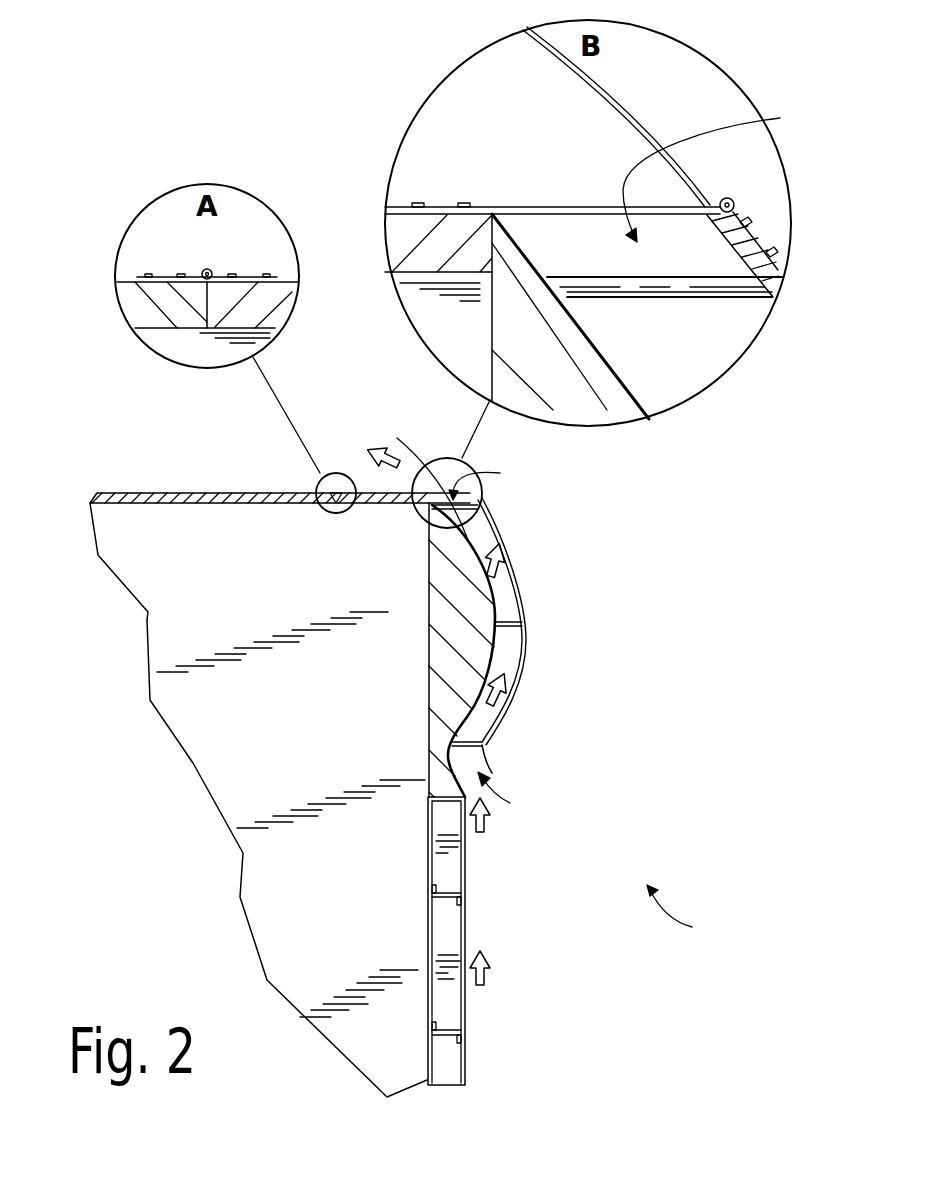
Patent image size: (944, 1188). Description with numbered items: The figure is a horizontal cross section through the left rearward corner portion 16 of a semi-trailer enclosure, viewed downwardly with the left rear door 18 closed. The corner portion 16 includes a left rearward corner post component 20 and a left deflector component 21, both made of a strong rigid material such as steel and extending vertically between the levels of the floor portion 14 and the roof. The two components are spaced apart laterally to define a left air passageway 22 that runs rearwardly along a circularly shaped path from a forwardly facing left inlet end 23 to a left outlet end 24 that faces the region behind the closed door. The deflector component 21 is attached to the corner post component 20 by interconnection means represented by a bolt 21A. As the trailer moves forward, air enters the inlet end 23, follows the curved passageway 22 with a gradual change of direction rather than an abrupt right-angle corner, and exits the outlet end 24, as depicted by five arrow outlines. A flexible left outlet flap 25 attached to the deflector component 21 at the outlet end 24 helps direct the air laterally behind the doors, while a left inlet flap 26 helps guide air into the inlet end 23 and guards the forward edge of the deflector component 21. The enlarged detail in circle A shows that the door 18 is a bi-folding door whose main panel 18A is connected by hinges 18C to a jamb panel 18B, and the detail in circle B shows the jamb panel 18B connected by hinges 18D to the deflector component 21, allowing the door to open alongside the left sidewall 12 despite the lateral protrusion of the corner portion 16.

The left sidewall 12 is at (468, 1017).
The floor portion 14 is at (242, 798).
The left rearward corner portion 16 is at (684, 915).
The left rear door 18 is at (135, 498).
The main panel 18A is at (138, 310).
The jamb panel 18B is at (278, 310).
The hinges 18C is at (203, 272).
The hinges 18D is at (733, 192).
The left rearward corner post component 20 is at (478, 606).
The left deflector component 21 is at (473, 512).
The bolt 21A is at (737, 293).
The left air passageway 22 is at (508, 650).
The left inlet end 23 is at (505, 802).
The left outlet end 24 is at (634, 305).
The left outlet flap 25 is at (405, 437).
The left inlet flap 26 is at (485, 765).